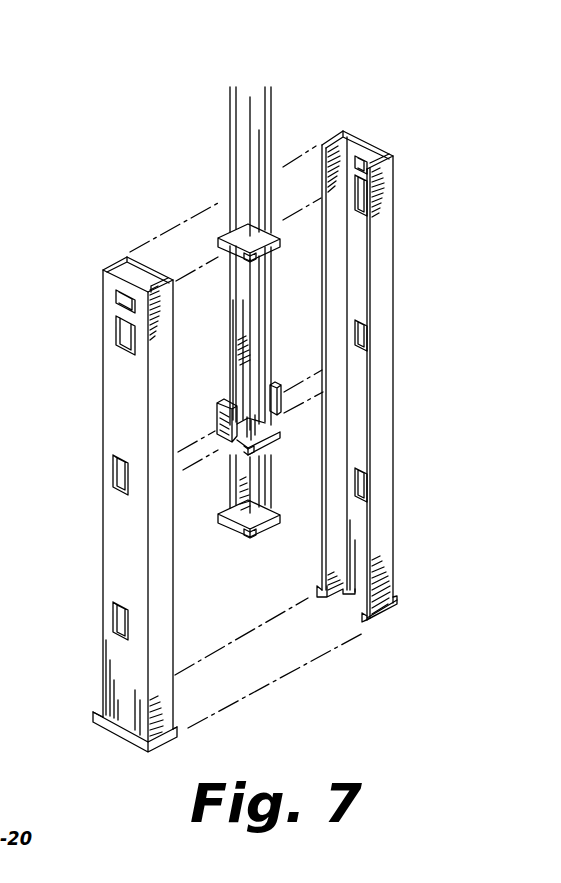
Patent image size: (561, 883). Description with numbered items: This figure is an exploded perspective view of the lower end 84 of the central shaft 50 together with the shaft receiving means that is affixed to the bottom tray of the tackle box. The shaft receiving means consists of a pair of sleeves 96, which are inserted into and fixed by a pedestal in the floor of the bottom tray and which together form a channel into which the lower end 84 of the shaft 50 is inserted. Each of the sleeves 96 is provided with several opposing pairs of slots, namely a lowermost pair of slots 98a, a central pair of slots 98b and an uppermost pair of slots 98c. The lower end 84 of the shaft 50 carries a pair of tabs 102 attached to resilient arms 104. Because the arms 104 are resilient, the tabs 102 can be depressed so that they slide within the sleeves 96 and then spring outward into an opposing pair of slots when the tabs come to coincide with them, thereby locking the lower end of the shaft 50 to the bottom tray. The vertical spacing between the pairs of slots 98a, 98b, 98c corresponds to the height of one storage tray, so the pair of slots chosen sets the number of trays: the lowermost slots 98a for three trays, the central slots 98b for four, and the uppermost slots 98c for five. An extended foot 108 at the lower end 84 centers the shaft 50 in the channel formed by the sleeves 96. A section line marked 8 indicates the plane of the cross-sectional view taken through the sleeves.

The section line 8- 8 is at (453, 130).
The lower end of the shaft 84 is at (307, 113).
The shaft 50 is at (232, 157).
The sleeves 96 is at (96, 504).
The lowermost pair of slots 98a is at (116, 345).
The central pair of slots 98b is at (113, 474).
The uppermost pair of slots 98c is at (113, 617).
The tabs 102 is at (217, 428).
The resilient arms 104 is at (240, 372).
The extended foot 108 is at (242, 473).